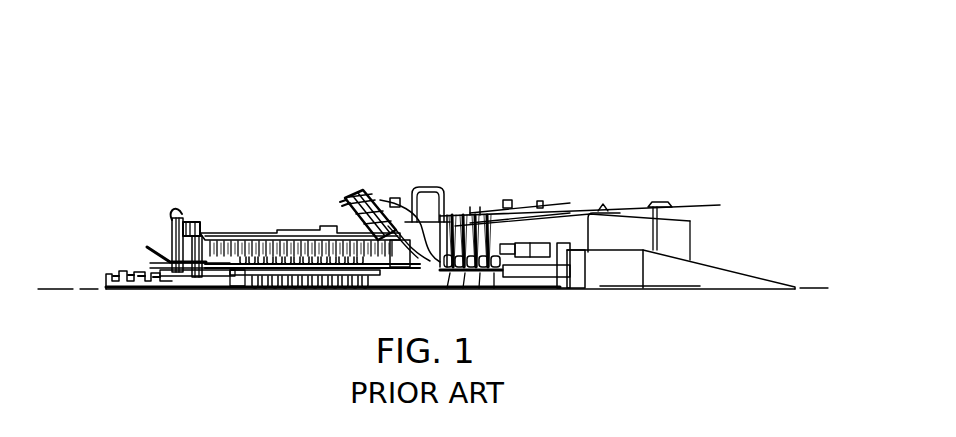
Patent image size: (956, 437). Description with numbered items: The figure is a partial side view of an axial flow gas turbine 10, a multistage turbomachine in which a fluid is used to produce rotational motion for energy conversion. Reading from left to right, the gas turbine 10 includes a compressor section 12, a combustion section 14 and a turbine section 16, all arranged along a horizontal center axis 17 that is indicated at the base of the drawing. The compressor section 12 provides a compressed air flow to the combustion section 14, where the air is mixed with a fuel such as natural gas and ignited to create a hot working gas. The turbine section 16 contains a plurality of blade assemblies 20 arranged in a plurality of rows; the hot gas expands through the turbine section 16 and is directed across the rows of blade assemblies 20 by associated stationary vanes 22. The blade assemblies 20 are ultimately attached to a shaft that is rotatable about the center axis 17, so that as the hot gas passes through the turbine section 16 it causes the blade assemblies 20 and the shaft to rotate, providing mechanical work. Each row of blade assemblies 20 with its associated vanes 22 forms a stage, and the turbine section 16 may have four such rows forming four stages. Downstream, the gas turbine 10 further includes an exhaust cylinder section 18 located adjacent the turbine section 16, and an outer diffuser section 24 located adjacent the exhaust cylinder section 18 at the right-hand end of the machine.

The axial flow gas turbine 10 is at (162, 124).
The compressor section 12 is at (292, 228).
The combustion section 14 is at (428, 201).
The turbine section 16 is at (467, 200).
The horizontal center axis 17 is at (57, 288).
The exhaust cylinder section 18 is at (532, 200).
The blade assemblies 20 is at (492, 177).
The stationary vanes 22 is at (457, 194).
The outer diffuser section 24 is at (642, 198).